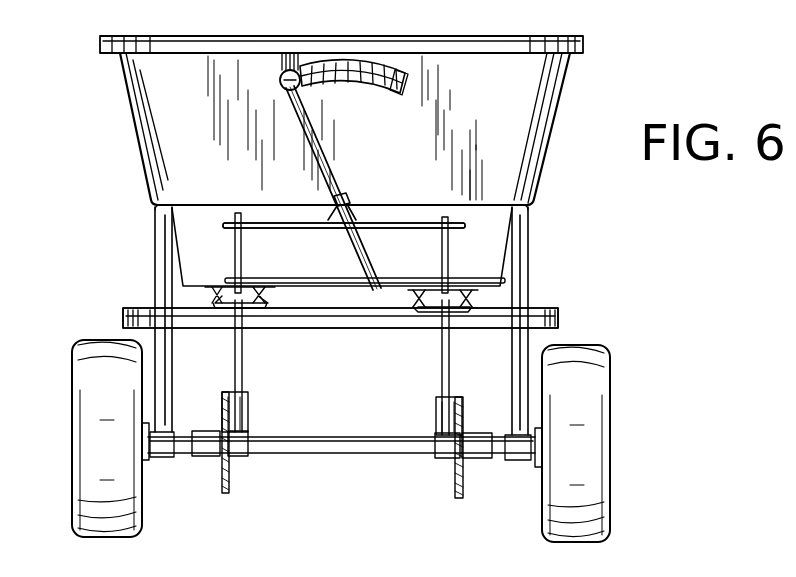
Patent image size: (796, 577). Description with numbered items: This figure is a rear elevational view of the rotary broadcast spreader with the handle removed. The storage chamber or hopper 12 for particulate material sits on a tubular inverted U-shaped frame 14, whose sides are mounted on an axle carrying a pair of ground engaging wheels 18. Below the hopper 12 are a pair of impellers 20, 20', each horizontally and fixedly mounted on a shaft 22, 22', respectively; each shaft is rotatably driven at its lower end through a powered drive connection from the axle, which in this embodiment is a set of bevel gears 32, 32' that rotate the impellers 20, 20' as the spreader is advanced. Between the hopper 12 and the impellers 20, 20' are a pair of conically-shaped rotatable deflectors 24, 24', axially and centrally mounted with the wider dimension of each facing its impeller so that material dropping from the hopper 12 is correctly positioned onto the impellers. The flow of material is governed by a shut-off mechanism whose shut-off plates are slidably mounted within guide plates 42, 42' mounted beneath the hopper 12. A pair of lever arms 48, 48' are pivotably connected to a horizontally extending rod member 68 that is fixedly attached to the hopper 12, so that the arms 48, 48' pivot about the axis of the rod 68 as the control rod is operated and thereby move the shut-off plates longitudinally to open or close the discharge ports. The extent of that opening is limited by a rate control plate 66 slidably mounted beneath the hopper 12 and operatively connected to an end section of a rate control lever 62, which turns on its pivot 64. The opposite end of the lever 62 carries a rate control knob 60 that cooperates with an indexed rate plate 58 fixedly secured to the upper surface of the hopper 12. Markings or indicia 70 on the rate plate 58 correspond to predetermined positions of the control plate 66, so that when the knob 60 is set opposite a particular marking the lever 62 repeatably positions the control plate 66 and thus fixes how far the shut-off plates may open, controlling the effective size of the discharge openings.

The hopper 12 is at (128, 92).
The tubular inverted U-shaped frame 14 is at (156, 243).
The ground engaging wheel 18 is at (72, 388).
The impeller 20 is at (340, 343).
The impeller 20' is at (340, 353).
The shaft 22 is at (248, 366).
The shaft 22' is at (429, 367).
The conically-shaped rotatable deflector 24 is at (272, 276).
The conically-shaped rotatable deflector 24' is at (508, 294).
The bevel gear 32 is at (341, 443).
The bevel gear 32' is at (446, 447).
The guide plate 42 is at (227, 327).
The guide plate 42' is at (452, 337).
The lever arm 48 is at (342, 225).
The lever arm 48' is at (403, 235).
The rate plate 58 is at (403, 88).
The rate control knob 60 is at (282, 78).
The rate control lever 62 is at (326, 140).
The pivot 64 is at (345, 194).
The rate control plate 66 is at (250, 273).
The horizontally extending rod member 68 is at (472, 200).
The markings or indicia 70 is at (355, 66).